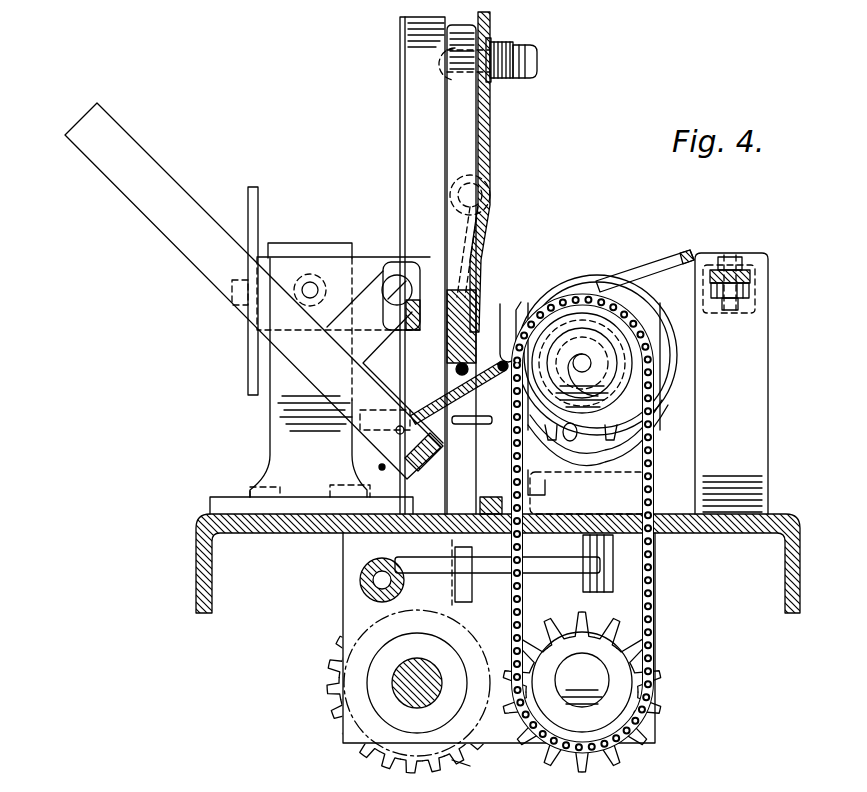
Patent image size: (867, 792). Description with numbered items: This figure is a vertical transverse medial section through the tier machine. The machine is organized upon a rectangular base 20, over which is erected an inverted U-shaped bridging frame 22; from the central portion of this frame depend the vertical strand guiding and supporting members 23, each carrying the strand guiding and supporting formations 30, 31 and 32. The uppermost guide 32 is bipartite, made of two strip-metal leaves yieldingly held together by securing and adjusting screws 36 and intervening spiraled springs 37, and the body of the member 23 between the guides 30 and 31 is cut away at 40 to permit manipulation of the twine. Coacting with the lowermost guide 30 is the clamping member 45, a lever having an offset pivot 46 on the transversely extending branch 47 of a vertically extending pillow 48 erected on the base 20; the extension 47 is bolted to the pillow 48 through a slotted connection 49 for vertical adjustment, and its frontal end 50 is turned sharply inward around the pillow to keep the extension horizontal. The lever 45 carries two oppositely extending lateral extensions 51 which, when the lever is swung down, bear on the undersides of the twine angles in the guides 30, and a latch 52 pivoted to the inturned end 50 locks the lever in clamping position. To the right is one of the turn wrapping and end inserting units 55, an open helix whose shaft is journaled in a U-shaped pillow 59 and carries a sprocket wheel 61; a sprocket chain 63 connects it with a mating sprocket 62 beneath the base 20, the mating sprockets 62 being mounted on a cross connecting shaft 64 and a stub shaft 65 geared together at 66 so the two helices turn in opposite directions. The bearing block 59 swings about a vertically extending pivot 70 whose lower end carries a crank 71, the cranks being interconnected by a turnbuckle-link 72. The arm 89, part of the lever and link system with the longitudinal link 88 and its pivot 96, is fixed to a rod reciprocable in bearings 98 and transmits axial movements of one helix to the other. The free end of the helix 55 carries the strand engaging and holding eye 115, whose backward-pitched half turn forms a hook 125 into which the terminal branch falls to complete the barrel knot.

The rectangular base 20 is at (196, 543).
The inverted U-shaped frame 22 is at (405, 77).
The vertical strand guiding and supporting members 23 is at (458, 118).
The lowermost strand guide 30 is at (472, 300).
The intermediate strand guide 31 is at (460, 186).
The uppermost strand guide and clamp 32 is at (500, 40).
The securing and adjusting screws 36 is at (537, 62).
The spiraled springs 37 is at (498, 82).
The cutaway 40 is at (484, 224).
The clamping member 45 is at (186, 250).
The offset pivot 46 is at (390, 282).
The transversely extending branch 47 is at (395, 257).
The pillow 48 is at (268, 413).
The slotted connection 49 is at (310, 280).
The frontal end 50 is at (268, 256).
The lateral extensions 51 is at (348, 426).
The latch 52 is at (248, 362).
The turn wrapping and end inserting unit 55 is at (586, 284).
The U-shaped pillow 59 is at (576, 504).
The sprocket wheel 61 is at (652, 430).
The mating sprocket 62 is at (630, 650).
The sprocket chains 63 is at (655, 574).
The cross connecting shaft 64 is at (400, 678).
The stub shaft 65 is at (598, 676).
The gearing 66 is at (540, 760).
The vertical pivot 70 is at (580, 545).
The cranks 71 is at (440, 558).
The turnbuckle-link 72 is at (360, 585).
The longitudinally extending link 88 is at (750, 278).
The arm 89 is at (658, 266).
The pivot 96 is at (736, 262).
The bearings 98 is at (764, 372).
The strand engaging and holding eye 115 is at (540, 470).
The hook 125 is at (505, 306).